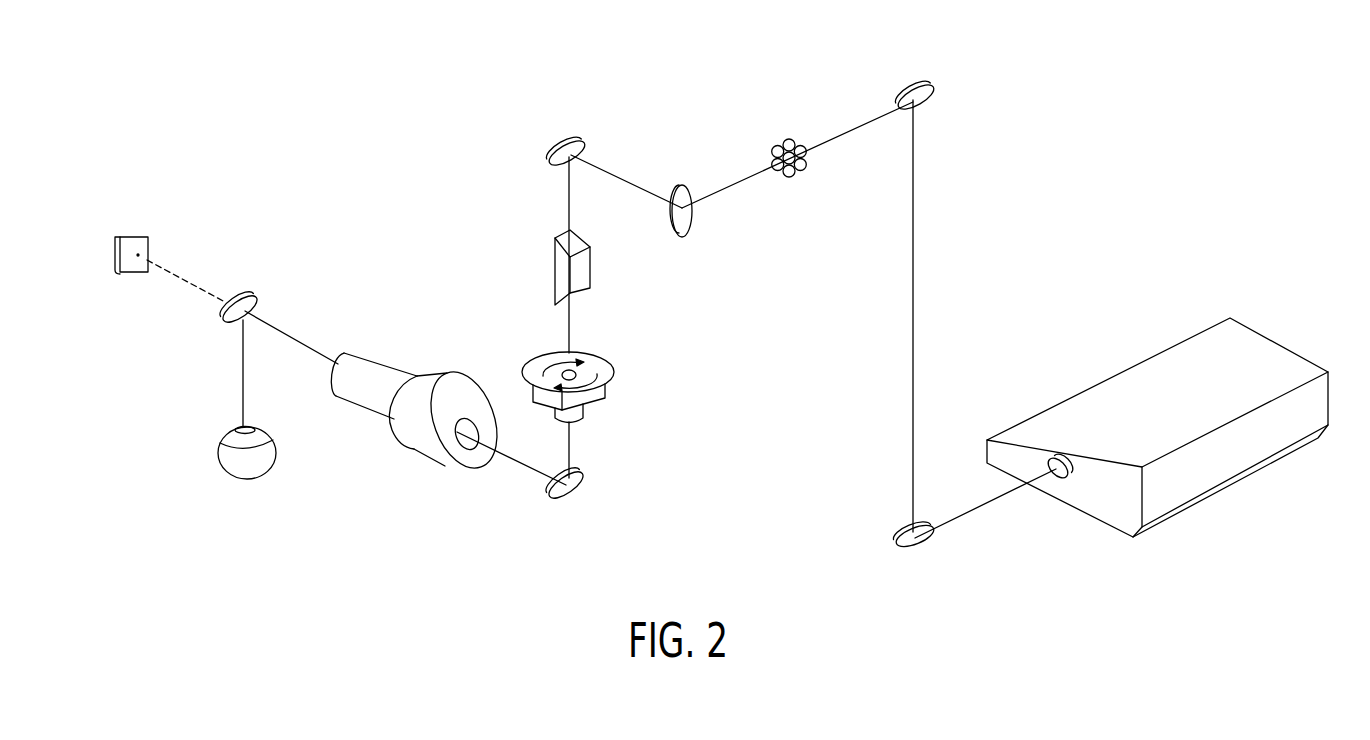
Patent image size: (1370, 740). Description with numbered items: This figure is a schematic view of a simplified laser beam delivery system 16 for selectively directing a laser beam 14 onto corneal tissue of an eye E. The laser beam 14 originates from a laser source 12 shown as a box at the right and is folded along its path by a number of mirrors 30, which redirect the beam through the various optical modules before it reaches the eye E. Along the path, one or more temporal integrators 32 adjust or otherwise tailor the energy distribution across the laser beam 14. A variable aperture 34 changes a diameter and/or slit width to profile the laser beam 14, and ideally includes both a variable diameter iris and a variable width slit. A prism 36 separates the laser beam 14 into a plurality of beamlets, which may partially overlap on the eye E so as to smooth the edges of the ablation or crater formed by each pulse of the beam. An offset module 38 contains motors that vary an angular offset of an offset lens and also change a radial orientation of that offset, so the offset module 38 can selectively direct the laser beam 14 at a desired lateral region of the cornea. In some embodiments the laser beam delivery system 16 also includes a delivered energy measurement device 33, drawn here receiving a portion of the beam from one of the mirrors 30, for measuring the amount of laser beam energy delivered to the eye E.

The laser source 12 is at (1130, 387).
The laser beam 14 is at (912, 429).
The laser beam delivery system 16 is at (1016, 280).
The mirrors 30 is at (243, 296).
The temporal integrator 32 is at (555, 272).
The delivered energy measurement device 33 is at (135, 236).
The variable aperture 34 is at (611, 360).
The prism 36 is at (787, 143).
The offset module 38 is at (419, 370).
The eye E is at (218, 449).